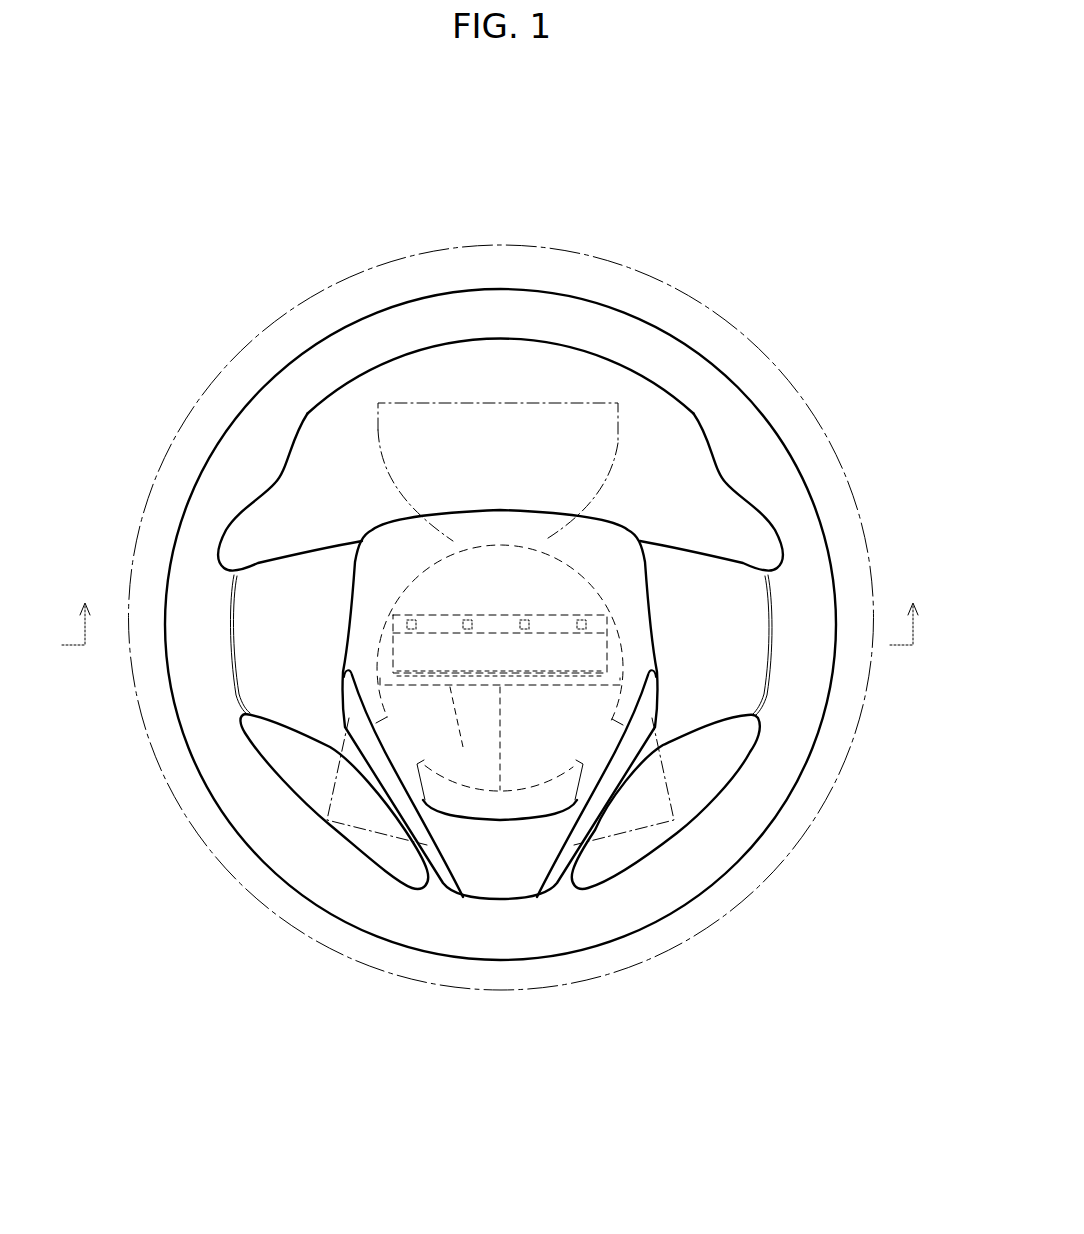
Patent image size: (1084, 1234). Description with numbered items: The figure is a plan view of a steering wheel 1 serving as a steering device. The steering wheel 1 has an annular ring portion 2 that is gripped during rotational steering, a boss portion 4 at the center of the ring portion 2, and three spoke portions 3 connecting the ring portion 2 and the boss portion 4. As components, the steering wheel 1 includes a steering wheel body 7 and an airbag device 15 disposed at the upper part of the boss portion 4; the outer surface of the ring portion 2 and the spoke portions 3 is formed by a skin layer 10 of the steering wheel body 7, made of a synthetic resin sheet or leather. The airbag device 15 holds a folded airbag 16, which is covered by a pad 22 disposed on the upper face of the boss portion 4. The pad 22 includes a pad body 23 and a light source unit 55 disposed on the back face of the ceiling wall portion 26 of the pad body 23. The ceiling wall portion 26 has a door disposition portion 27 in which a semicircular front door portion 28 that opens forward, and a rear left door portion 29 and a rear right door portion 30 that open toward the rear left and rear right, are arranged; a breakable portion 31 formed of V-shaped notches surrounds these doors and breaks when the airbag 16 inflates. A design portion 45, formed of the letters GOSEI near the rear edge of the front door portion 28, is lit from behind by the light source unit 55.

The steering wheel 1 is at (600, 216).
The ring portion 2 is at (758, 377).
The spoke portion 3 is at (281, 556).
The boss portion 4 is at (541, 508).
The steering wheel body 7 is at (289, 356).
The skin layer 10 is at (790, 477).
The airbag device 15 is at (371, 522).
The airbag 16 is at (655, 247).
The pad 22 is at (501, 645).
The pad body 23 is at (343, 613).
The ceiling wall portion 26 is at (613, 551).
The door disposition portion 27 is at (515, 545).
The front door portion 28 is at (433, 590).
The rear left door portion 29 is at (413, 710).
The rear right door portion 30 is at (530, 770).
The breakable portion 31 is at (500, 743).
The design portion 45 is at (592, 655).
The light source unit 55 is at (588, 610).